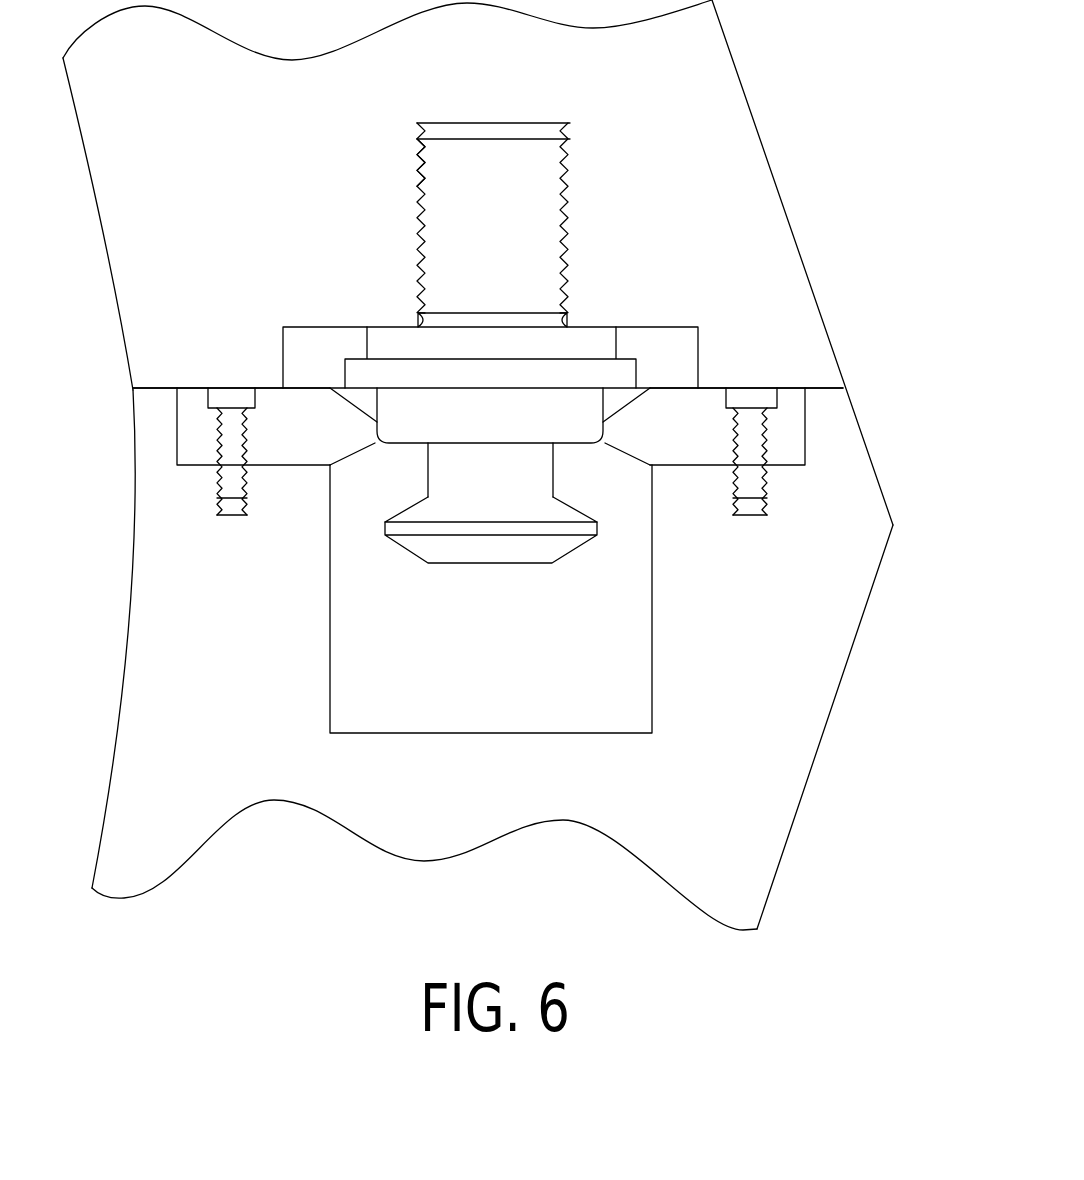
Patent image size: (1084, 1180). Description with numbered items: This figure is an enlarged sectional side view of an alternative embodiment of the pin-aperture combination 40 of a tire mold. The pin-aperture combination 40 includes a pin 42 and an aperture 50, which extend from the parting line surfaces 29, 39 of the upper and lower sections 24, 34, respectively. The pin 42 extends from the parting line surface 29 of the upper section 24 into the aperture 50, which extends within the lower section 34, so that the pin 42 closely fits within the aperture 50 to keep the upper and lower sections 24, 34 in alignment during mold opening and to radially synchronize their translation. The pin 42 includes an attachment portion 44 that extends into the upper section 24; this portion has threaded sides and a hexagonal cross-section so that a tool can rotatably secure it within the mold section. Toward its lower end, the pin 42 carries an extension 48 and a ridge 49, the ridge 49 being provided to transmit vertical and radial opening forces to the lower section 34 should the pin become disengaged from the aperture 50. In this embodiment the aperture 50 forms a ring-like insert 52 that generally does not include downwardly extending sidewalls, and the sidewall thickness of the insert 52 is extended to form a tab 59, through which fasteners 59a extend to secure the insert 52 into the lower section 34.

The upper section 24 is at (163, 65).
The lower section 34 is at (163, 880).
The pin-aperture combination 40 is at (693, 227).
The pin 42 is at (457, 177).
The attachment portion 44 is at (480, 253).
The parting line surface 29 is at (158, 388).
The parting line surface 39 is at (153, 392).
The insert 52 is at (807, 402).
The tab 59 is at (187, 445).
The fasteners 59a is at (230, 398).
The extension 48 is at (465, 483).
The ridge 49 is at (453, 563).
The aperture 50 is at (652, 662).